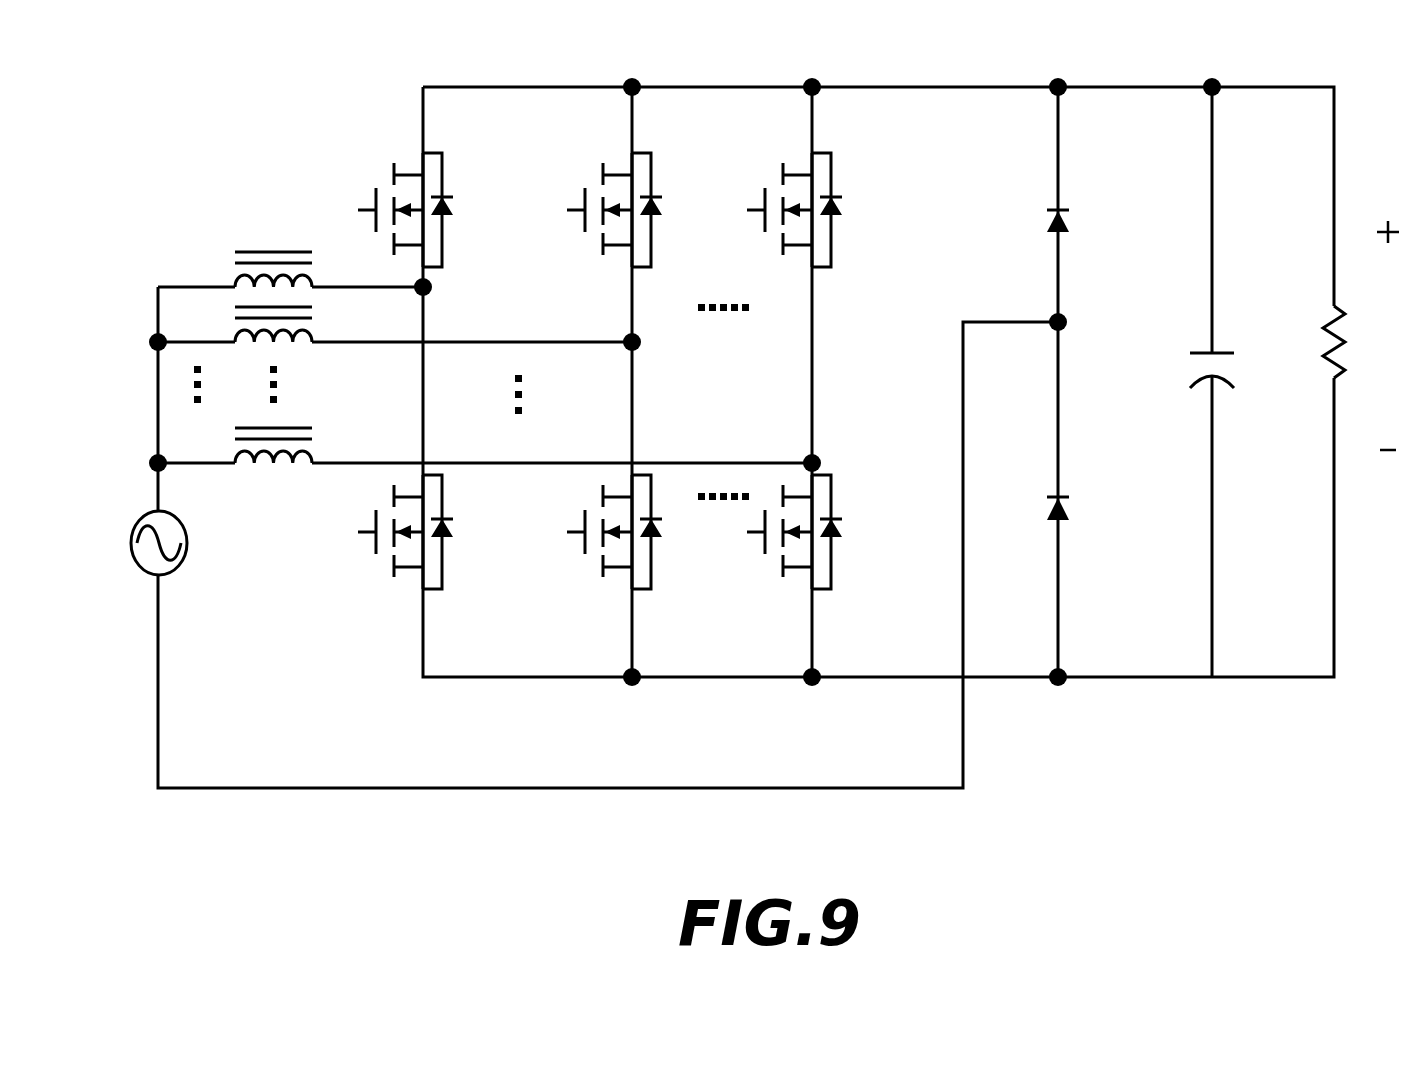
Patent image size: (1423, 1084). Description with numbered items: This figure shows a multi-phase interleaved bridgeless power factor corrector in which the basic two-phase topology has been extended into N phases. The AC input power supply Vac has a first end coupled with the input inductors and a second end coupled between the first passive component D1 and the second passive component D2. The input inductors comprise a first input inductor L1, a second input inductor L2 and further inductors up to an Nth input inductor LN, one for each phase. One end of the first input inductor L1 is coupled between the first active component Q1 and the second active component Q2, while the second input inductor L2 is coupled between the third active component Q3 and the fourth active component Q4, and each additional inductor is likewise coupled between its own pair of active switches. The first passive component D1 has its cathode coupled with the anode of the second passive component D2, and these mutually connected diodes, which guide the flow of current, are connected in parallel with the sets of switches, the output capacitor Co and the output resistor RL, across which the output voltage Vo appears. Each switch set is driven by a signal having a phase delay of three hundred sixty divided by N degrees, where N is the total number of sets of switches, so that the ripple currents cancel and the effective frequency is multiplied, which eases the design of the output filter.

The first input inductor L1 is at (242, 252).
The second input inductor L2 is at (242, 312).
The Nth input inductor LN is at (242, 431).
The first active component Q1 is at (438, 210).
The second active component Q2 is at (432, 532).
The third active component Q3 is at (642, 210).
The fourth active component Q4 is at (645, 536).
The first passive component D1 is at (1089, 223).
The second passive component D2 is at (1089, 504).
The output capacitor Co is at (1181, 366).
The output resistor RL is at (1297, 352).
The output voltage Vo is at (1388, 365).
The AC input power supply Vac is at (135, 543).